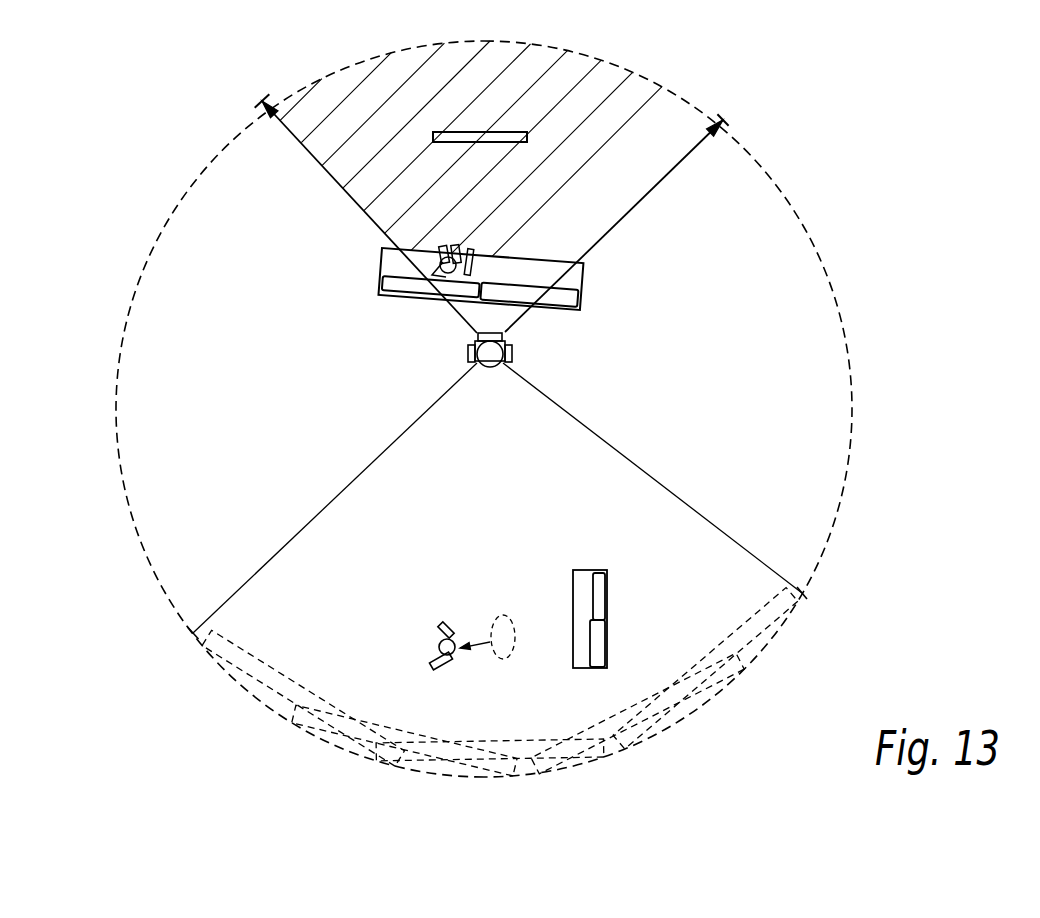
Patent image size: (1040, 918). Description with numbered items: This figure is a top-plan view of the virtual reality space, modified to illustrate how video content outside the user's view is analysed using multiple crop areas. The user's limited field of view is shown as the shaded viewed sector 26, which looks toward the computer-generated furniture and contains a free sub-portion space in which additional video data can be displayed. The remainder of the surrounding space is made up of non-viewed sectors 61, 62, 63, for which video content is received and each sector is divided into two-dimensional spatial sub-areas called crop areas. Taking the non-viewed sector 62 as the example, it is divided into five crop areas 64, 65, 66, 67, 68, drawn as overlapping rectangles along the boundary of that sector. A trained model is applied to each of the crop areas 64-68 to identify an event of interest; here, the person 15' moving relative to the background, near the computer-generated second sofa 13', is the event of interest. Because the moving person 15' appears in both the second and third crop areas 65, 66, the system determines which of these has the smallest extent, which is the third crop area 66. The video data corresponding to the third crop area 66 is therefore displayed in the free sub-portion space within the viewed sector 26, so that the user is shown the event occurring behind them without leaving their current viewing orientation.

The second sofa (computer-generated version) 13' is at (579, 568).
The person (computer-generated version) 15' is at (470, 595).
The viewed sector 26 is at (657, 100).
The non-viewed sector 61 is at (838, 355).
The non-viewed sector 62 is at (240, 607).
The non-viewed sector 63 is at (128, 357).
The first crop area 64 is at (215, 650).
The second crop area 65 is at (290, 714).
The third crop area 66 is at (380, 762).
The fourth crop area 67 is at (675, 703).
The fifth crop area 68 is at (790, 612).